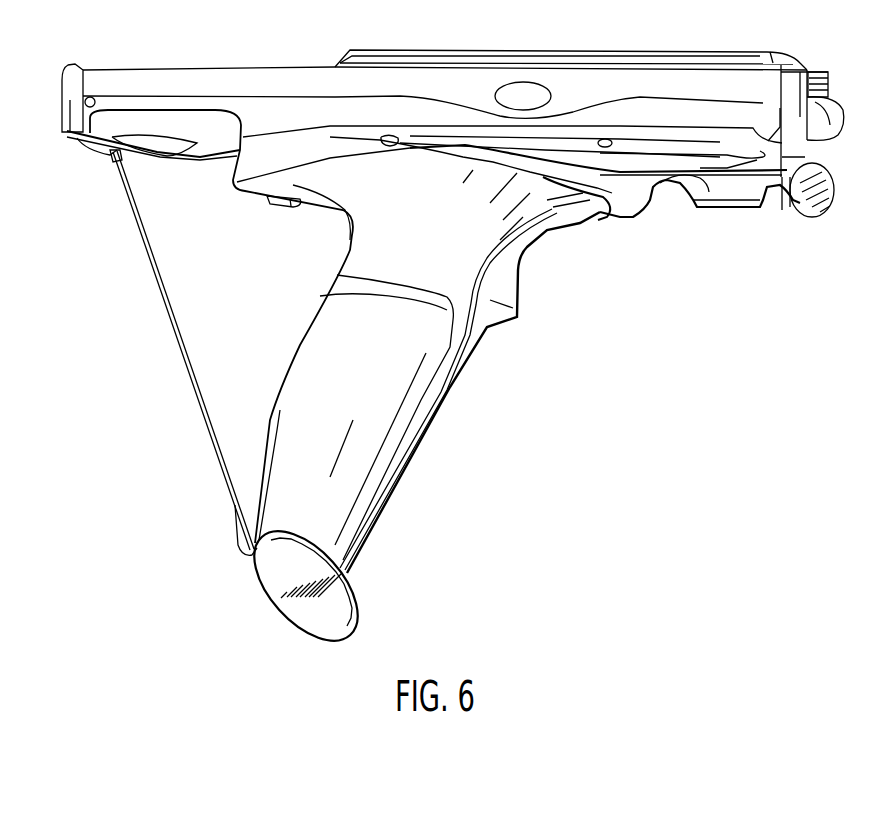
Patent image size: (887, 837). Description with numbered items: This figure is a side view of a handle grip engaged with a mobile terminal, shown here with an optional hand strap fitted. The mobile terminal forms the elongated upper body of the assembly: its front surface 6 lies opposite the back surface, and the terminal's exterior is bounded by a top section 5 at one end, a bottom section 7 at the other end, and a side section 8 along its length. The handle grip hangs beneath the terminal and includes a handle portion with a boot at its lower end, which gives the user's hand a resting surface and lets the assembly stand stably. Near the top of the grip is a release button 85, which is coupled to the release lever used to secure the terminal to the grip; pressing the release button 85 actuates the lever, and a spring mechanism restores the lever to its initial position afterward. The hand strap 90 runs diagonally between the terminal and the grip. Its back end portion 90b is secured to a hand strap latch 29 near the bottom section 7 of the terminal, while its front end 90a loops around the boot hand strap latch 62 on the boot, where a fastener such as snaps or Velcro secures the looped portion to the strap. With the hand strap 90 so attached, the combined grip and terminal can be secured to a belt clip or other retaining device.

The top section 5 is at (835, 86).
The front surface 6 is at (257, 68).
The bottom section 7 is at (67, 100).
The side section 8 is at (587, 88).
The hand strap latch 29 is at (93, 158).
The boot hand strap latch 62 is at (515, 296).
The release button 85 is at (291, 207).
The hand strap 90 is at (178, 340).
The front end 90a is at (250, 532).
The back end portion 90b is at (113, 158).